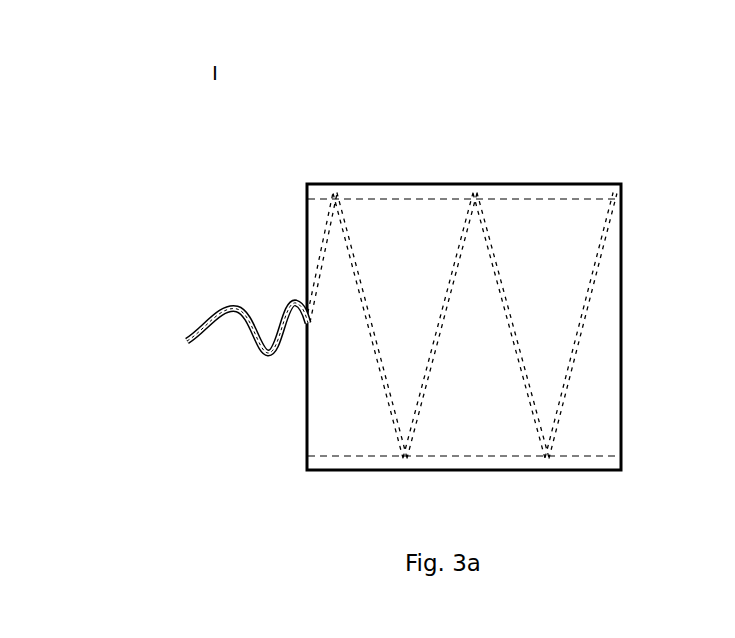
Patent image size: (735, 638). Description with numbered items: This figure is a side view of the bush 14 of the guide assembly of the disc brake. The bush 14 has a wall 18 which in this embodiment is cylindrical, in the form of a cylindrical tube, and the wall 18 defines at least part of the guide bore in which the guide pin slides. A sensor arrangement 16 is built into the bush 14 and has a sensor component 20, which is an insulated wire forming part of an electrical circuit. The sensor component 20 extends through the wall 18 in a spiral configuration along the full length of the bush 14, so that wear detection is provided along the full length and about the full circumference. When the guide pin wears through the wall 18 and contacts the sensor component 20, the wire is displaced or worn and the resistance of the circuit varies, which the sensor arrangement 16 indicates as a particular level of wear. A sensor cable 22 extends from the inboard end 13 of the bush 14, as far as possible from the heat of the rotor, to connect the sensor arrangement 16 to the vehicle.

The inboard end 13 is at (332, 164).
The bush 14 is at (530, 84).
The sensor arrangement 16 is at (372, 354).
The wall 18 is at (542, 194).
The sensor component 20 is at (586, 322).
The sensor cable 22 is at (212, 322).